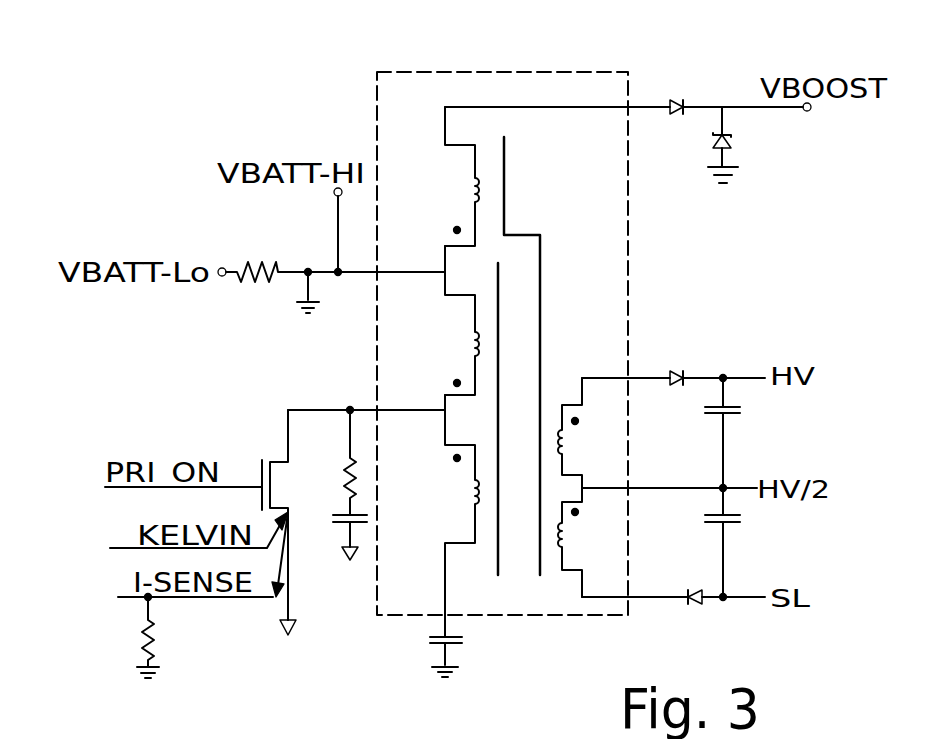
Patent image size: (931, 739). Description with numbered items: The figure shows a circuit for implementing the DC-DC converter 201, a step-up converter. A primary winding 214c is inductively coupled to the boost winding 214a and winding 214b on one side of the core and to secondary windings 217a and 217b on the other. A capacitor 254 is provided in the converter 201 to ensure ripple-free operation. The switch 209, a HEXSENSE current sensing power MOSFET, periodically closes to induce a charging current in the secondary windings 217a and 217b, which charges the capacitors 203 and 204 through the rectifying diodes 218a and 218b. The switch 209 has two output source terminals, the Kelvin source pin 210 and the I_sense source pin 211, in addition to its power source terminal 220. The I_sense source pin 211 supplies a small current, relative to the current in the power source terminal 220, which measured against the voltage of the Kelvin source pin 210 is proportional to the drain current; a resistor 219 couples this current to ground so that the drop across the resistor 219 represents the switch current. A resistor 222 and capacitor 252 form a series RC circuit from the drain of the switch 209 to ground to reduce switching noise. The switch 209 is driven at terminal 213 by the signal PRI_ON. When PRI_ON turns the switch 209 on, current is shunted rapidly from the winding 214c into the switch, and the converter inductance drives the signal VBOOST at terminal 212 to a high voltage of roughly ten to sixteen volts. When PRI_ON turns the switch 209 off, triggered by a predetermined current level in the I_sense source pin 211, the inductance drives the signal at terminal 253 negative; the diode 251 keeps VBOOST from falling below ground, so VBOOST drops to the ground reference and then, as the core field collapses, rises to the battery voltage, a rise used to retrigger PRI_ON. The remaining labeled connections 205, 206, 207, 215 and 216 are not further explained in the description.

The DC-DC converter 201 is at (578, 72).
The capacitor 203 is at (735, 416).
The capacitor 204 is at (737, 524).
The HV output line 205 is at (642, 377).
The SL output line 206 is at (658, 599).
The HV/2 line 207 is at (663, 489).
The switch 209 is at (271, 482).
The Kelvin source pin 210 is at (118, 548).
The I_sense source pin 211 is at (222, 600).
The terminal 212 is at (741, 107).
The terminal 213 is at (237, 487).
The boost winding 214a is at (472, 198).
The winding 214b is at (472, 338).
The primary winding 214c is at (472, 500).
The node line 215 is at (302, 410).
The battery input line 216 is at (354, 275).
The secondary winding 217a is at (565, 548).
The secondary winding 217b is at (565, 442).
The rectifying diode 218a is at (689, 342).
The rectifying diode 218b is at (700, 604).
The resistor 219 is at (145, 652).
The power source terminal 220 is at (297, 612).
The resistor 222 is at (350, 455).
The diode 251 is at (732, 130).
The capacitor 252 is at (333, 530).
The terminal 253 is at (647, 110).
The capacitor 254 is at (458, 648).